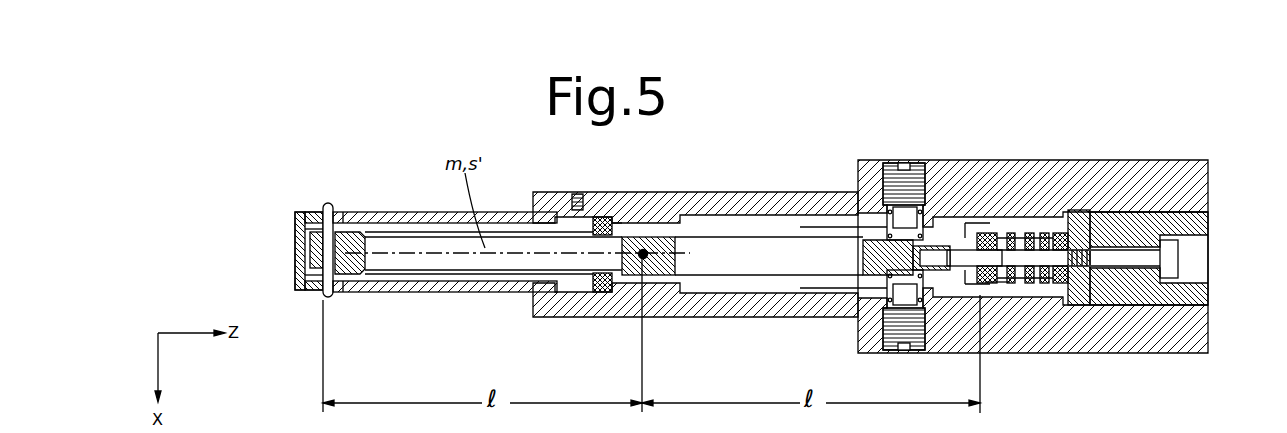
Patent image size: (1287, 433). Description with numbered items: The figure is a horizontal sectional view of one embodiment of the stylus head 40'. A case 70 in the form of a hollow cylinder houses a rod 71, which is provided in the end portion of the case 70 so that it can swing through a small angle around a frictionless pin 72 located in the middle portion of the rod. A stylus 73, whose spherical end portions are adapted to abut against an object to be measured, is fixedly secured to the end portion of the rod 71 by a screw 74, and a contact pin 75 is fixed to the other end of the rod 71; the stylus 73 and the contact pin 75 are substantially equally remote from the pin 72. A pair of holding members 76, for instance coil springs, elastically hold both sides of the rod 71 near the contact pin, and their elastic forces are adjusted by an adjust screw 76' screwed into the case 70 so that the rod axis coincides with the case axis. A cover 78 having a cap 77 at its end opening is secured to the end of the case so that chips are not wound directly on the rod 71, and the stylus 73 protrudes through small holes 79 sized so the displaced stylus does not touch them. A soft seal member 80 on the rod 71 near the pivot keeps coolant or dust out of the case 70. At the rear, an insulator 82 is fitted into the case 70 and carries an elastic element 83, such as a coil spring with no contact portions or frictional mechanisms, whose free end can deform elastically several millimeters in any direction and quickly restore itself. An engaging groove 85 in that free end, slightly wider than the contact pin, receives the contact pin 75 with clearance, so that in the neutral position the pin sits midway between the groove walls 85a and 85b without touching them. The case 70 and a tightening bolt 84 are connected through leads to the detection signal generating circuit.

The stylus head 40' is at (1033, 235).
The case 70 is at (736, 193).
The rod 71 is at (695, 247).
The frictionless pin 72 is at (640, 236).
The stylus 73 is at (327, 204).
The screw 74 is at (316, 249).
The contact pin 75 is at (935, 235).
The holding members 76 is at (872, 269).
The adjust screw 76' is at (876, 250).
The cap 77 is at (300, 282).
The cover 78 is at (447, 292).
The small holes 79 is at (337, 212).
The soft seal member 80 is at (603, 293).
The insulator 82 is at (1206, 216).
The elastic element 83 is at (1040, 220).
The tightening bolt 84 is at (1178, 258).
The engaging groove 85 is at (1013, 217).
The groove wall 85a is at (962, 250).
The groove wall 85b is at (1003, 290).